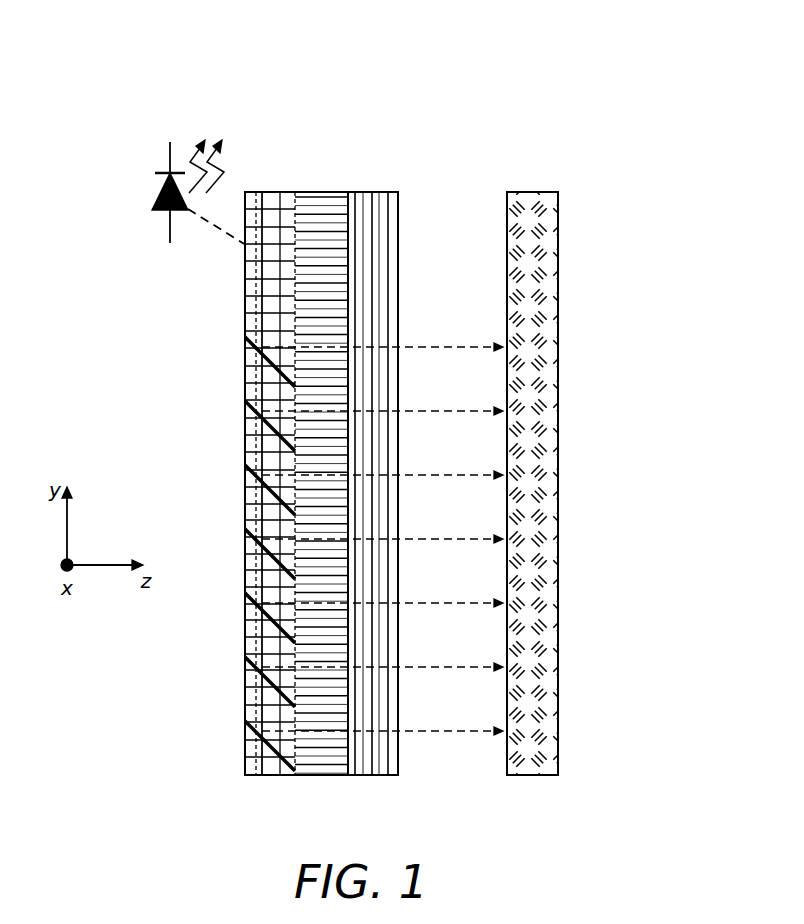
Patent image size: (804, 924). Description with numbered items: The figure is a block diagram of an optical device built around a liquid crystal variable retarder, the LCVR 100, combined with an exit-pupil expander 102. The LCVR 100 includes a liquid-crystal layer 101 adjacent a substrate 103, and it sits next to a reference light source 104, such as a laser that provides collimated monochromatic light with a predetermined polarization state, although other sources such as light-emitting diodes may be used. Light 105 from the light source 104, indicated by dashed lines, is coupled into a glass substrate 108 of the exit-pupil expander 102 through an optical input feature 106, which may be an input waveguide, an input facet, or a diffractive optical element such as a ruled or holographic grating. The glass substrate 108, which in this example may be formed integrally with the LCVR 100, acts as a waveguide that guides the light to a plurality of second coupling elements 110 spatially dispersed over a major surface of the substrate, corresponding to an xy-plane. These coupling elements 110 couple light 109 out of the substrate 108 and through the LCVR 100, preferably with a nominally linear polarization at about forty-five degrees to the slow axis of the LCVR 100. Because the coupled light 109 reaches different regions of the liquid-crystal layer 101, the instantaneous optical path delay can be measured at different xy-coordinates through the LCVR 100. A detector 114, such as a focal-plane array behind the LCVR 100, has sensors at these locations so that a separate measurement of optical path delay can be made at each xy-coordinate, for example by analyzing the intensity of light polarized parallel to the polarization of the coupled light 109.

The liquid crystal variable retarder (LCVR) 100 is at (323, 120).
The liquid-crystal layer 101 is at (320, 192).
The exit-pupil expander 102 is at (284, 165).
The substrate 103 is at (372, 192).
The reference light source 104 is at (162, 173).
The light 105 is at (226, 234).
The optical input feature 106 is at (252, 192).
The glass substrate 108 is at (272, 778).
The coupled light 109 is at (445, 411).
The second coupling elements 110 is at (247, 403).
The detector 114 is at (530, 192).